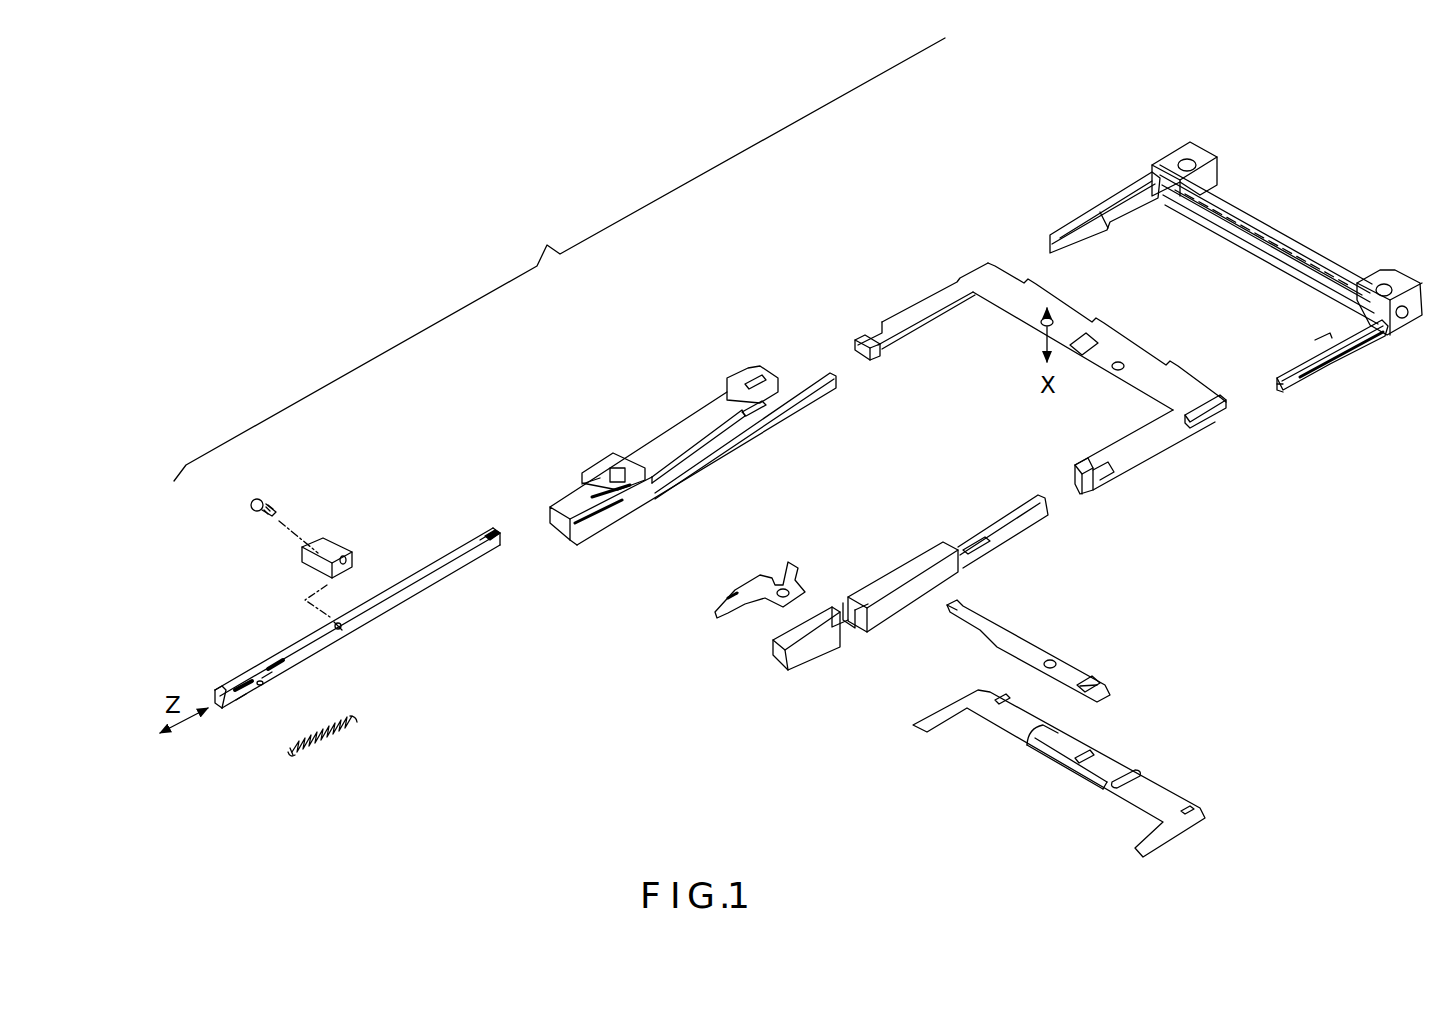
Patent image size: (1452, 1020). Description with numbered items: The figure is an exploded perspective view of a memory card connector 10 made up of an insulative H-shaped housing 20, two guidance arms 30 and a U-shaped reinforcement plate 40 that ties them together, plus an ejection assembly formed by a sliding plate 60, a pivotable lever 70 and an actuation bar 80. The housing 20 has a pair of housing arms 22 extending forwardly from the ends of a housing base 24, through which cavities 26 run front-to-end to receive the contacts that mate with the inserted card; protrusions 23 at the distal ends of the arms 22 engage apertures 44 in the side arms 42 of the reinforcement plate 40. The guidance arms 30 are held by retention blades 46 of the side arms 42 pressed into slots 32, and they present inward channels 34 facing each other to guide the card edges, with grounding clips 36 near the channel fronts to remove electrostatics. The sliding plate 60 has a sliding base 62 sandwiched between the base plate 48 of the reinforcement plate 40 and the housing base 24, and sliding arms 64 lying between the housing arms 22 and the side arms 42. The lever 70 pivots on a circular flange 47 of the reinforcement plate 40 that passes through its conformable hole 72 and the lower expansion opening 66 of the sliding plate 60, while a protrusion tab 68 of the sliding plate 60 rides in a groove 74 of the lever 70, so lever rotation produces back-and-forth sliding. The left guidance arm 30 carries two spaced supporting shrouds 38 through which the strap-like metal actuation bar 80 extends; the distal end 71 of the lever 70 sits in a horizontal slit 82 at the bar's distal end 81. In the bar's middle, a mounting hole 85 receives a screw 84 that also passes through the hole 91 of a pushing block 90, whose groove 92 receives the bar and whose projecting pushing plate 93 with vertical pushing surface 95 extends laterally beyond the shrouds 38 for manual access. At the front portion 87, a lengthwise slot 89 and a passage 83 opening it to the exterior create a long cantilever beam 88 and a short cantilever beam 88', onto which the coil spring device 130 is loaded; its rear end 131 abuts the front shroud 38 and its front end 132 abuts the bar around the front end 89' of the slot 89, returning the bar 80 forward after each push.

The memory card connector 10 is at (618, 837).
The insulative H-shaped housing 20 is at (1289, 229).
The housing arm 22 is at (1138, 190).
The protrusion 23 is at (1285, 392).
The housing base 24 is at (1250, 216).
The cavity 26 is at (1340, 318).
The guidance arm 30 is at (660, 448).
The slot 32 is at (764, 408).
The inward channel 34 is at (712, 450).
The grounding clip 36 is at (737, 605).
The supporting shroud 38 is at (598, 462).
The U-shaped reinforcement plate 40 is at (1045, 271).
The side arm 42 is at (932, 300).
The aperture 44 is at (1115, 473).
The retention blade 46 is at (880, 345).
The circular flange 47 is at (1040, 326).
The base plate 48 is at (1068, 318).
The sliding plate 60 is at (1151, 766).
The sliding base 62 is at (1165, 795).
The sliding arm 64 is at (942, 712).
The lower expansion opening 66 is at (1038, 722).
The protrusion tab 68 is at (1088, 749).
The pivotable lever 70 is at (1039, 631).
The distal end 71 is at (960, 606).
The conformable hole 72 is at (1056, 658).
The groove 74 is at (1100, 684).
The actuation bar 80 is at (385, 608).
The distal end 81 is at (490, 546).
The horizontal slit 82 is at (480, 540).
The passage 83 is at (250, 698).
The screw 84 is at (268, 500).
The mounting hole 85 is at (343, 631).
The front portion 87 is at (218, 692).
The long cantilever beam 88 is at (252, 643).
The short cantilever beam 88' is at (223, 736).
The slot 89 is at (300, 681).
The front end of the slot 89' is at (227, 663).
The pushing block 90 is at (347, 533).
The hole 91 is at (360, 570).
The groove 92 is at (320, 573).
The projecting pushing plate 93 is at (318, 540).
The vertical pushing surface 95 is at (302, 553).
The spring device 130 is at (317, 723).
The rear end 131 is at (358, 722).
The front end 132 is at (295, 757).